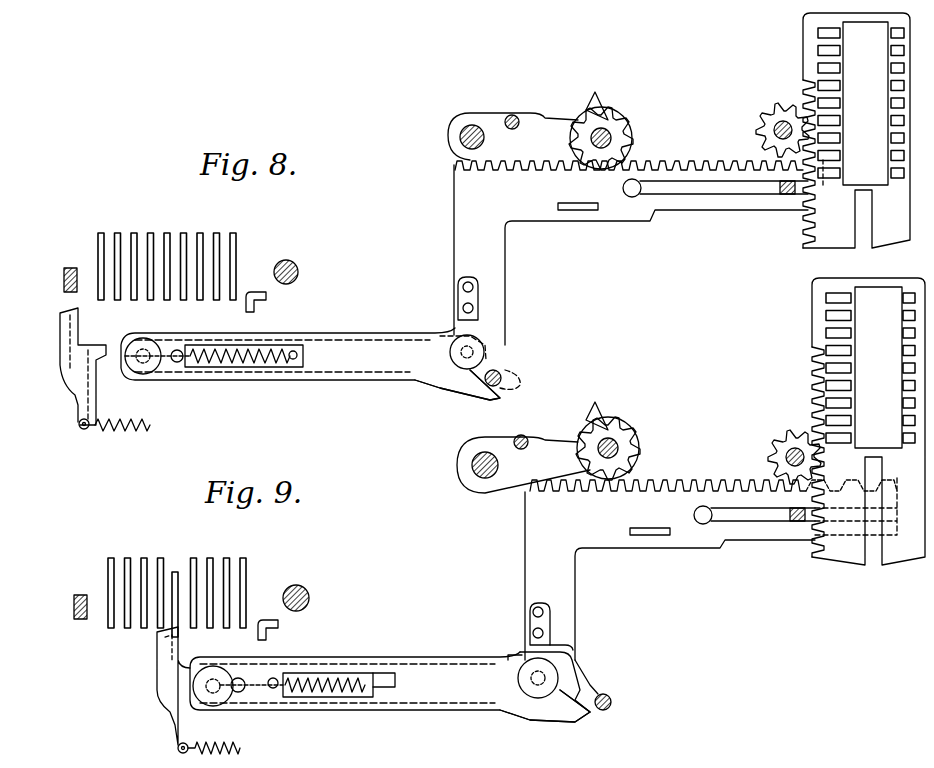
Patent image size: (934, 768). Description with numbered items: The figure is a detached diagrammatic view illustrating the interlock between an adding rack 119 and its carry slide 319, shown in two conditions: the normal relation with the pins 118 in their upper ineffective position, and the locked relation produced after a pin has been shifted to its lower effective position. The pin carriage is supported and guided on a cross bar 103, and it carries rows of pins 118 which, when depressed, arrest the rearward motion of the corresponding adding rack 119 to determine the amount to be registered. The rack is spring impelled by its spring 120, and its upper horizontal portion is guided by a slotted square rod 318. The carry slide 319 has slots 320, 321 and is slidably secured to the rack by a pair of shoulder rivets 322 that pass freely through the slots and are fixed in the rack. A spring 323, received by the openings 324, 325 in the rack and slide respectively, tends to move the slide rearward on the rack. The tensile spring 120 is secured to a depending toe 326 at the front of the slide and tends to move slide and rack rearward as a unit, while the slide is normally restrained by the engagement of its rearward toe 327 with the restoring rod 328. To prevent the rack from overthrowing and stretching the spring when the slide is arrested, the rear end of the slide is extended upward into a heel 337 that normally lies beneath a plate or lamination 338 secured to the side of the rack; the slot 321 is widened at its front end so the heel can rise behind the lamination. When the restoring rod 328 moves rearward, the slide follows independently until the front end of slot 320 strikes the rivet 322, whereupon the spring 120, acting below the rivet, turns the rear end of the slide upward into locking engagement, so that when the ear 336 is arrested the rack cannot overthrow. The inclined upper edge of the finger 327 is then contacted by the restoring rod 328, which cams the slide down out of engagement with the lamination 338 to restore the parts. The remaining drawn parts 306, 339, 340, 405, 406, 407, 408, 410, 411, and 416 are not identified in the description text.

In FIG. 9, the cross bar 103 is at (316, 591).
In FIG. 8, the pins 118 is at (236, 250).
In FIG. 9, the pins 118 is at (246, 575).
In FIG. 8, the adding rack 119 is at (610, 225).
In FIG. 9, the adding rack 119 is at (688, 589).
In FIG. 8, the spring 120 is at (125, 420).
In FIG. 9, the spring 120 is at (230, 742).
In FIG. 8, the rod 306 is at (735, 200).
In FIG. 9, the rod 306 is at (738, 540).
In FIG. 8, the square rod 318 is at (785, 196).
In FIG. 9, the square rod 318 is at (795, 524).
In FIG. 8, the carry slide 319 is at (310, 364).
In FIG. 9, the carry slide 319 is at (390, 687).
In FIG. 9, the slot 320 is at (244, 678).
In FIG. 9, the slot 321 is at (576, 665).
In FIG. 8, the shoulder rivets 322 is at (157, 356).
In FIG. 9, the shoulder rivets 322 is at (215, 668).
In FIG. 8, the spring 323 is at (244, 356).
In FIG. 9, the spring 323 is at (312, 672).
In FIG. 9, the opening 324 is at (348, 672).
In FIG. 9, the opening 325 is at (388, 670).
In FIG. 8, the depending toe 326 is at (78, 408).
In FIG. 9, the depending toe 326 is at (176, 725).
In FIG. 8, the rearward toe 327 is at (470, 392).
In FIG. 9, the rearward toe 327 is at (568, 708).
In FIG. 8, the restoring rod 328 is at (500, 372).
In FIG. 9, the restoring rod 328 is at (607, 710).
In FIG. 9, the ear 336 is at (162, 650).
In FIG. 8, the heel 337 is at (460, 330).
In FIG. 9, the heel 337 is at (570, 648).
In FIG. 8, the lamination 338 is at (457, 292).
In FIG. 9, the lamination 338 is at (529, 620).
In FIG. 8, the cam surface 339 is at (523, 380).
In FIG. 9, the cam surface 339 is at (588, 690).
In FIG. 8, the slot 340 is at (575, 212).
In FIG. 9, the slot 340 is at (660, 536).
In FIG. 9, the gear shaft 405 is at (620, 446).
In FIG. 9, the gear 406 is at (625, 428).
In FIG. 8, the pawl 407 is at (604, 105).
In FIG. 9, the pawl 407 is at (604, 415).
In FIG. 8, the gear 408 is at (612, 135).
In FIG. 8, the rack lever 410 is at (535, 113).
In FIG. 9, the rack lever 410 is at (677, 465).
In FIG. 8, the pivot 411 is at (473, 125).
In FIG. 8, the pin 416 is at (511, 115).
In FIG. 9, the pin 416 is at (523, 436).